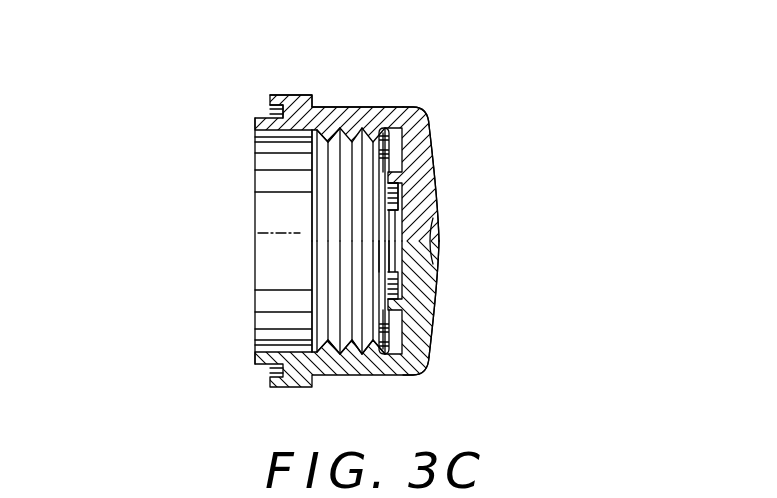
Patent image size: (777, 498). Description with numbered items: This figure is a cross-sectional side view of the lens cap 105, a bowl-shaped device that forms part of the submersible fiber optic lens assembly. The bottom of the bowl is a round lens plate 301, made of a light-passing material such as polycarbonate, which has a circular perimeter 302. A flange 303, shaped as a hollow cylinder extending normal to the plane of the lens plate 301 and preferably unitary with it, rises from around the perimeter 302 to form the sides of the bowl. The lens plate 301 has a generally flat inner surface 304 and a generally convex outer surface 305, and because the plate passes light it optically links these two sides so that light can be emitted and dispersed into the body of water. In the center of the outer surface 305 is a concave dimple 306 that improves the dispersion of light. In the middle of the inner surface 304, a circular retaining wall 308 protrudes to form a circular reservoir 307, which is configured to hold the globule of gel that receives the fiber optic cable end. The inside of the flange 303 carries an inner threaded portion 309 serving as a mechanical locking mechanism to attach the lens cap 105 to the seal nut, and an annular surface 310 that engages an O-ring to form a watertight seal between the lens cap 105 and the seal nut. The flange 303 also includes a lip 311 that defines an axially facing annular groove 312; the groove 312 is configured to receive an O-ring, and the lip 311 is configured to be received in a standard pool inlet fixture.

The lens cap 105 is at (550, 84).
The lens plate 301 is at (432, 152).
The circular perimeter 302 is at (410, 108).
The flange 303 is at (350, 110).
The inner surface 304 is at (400, 317).
The outer surface 305 is at (433, 283).
The concave dimple 306 is at (437, 230).
The circular reservoir 307 is at (397, 213).
The circular retaining wall 308 is at (393, 264).
The inner threaded portion 309 is at (337, 328).
The annular surface 310 is at (273, 153).
The lip 311 is at (298, 100).
The annular groove 312 is at (262, 108).